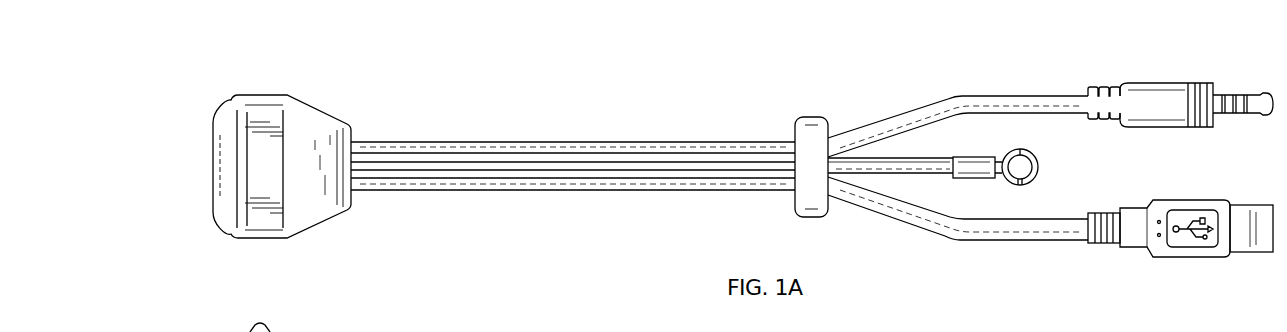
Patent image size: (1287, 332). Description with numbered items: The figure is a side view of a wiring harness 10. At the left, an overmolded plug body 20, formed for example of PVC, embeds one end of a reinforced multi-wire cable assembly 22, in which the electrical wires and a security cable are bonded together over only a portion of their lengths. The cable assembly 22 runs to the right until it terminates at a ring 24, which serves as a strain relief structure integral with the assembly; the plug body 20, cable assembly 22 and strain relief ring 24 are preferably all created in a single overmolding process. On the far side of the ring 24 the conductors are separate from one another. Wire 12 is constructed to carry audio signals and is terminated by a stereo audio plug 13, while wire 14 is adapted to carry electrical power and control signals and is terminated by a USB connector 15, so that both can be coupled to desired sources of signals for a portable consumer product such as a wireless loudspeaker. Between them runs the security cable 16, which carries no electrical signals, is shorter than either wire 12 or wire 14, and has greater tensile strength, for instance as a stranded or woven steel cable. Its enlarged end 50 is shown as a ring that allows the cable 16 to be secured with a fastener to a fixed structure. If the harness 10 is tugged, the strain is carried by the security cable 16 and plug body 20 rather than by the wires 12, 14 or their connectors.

The wiring harness 10 is at (888, 93).
The wire 12 is at (1034, 103).
The stereo audio plug 13 is at (1151, 103).
The wire 14 is at (1034, 228).
The USB connector 15 is at (1221, 208).
The security cable 16 is at (924, 165).
The overmolded plug body 20 is at (349, 110).
The reinforced multi-wire cable assembly 22 is at (716, 128).
The ring 24 is at (807, 121).
The end 50 is at (1036, 165).